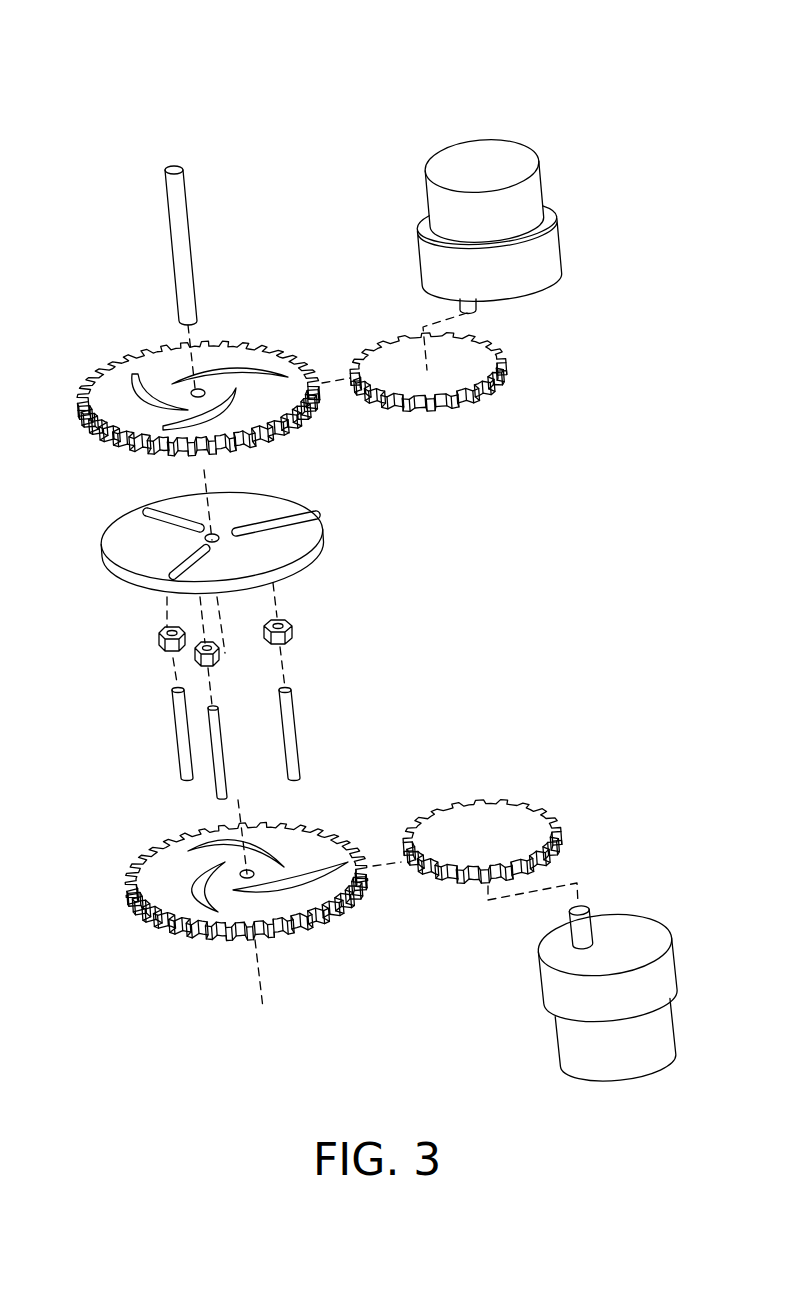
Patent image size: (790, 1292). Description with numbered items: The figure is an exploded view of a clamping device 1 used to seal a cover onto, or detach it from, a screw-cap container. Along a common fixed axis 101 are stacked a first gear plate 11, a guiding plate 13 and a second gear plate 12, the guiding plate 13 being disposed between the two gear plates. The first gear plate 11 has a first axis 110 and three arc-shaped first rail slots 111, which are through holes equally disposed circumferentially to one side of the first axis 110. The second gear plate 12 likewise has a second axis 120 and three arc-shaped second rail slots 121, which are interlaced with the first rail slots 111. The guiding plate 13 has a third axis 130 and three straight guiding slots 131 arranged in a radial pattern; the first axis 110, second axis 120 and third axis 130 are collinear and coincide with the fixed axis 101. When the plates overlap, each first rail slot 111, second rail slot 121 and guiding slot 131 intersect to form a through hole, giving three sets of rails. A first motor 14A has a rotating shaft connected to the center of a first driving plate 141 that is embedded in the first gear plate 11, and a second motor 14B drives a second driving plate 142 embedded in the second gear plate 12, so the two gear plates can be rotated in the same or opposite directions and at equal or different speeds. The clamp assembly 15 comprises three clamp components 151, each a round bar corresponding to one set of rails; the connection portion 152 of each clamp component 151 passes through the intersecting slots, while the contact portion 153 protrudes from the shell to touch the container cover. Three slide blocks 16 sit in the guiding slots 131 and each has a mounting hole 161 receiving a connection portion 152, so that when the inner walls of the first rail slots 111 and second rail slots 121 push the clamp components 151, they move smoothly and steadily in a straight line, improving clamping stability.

The clamping device 1 is at (373, 80).
The fixed axis 101 is at (183, 241).
The first gear plate 11 is at (108, 387).
The first axis 110 is at (196, 358).
The first rail slots 111 is at (268, 370).
The first motor 14A is at (437, 163).
The first driving plate 141 is at (395, 351).
The guiding plate 13 is at (116, 545).
The third axis 130 is at (212, 520).
The guiding slots 131 is at (285, 519).
The slide blocks 16 is at (259, 638).
The mounting hole 161 is at (283, 620).
The clamp assembly 15 is at (254, 736).
The clamp components 151 is at (293, 735).
The connection portion 152 is at (175, 698).
The contact portion 153 is at (185, 771).
The second gear plate 12 is at (153, 867).
The second axis 120 is at (254, 953).
The second rail slots 121 is at (332, 856).
The second driving plate 142 is at (484, 816).
The second motor 14B is at (620, 922).